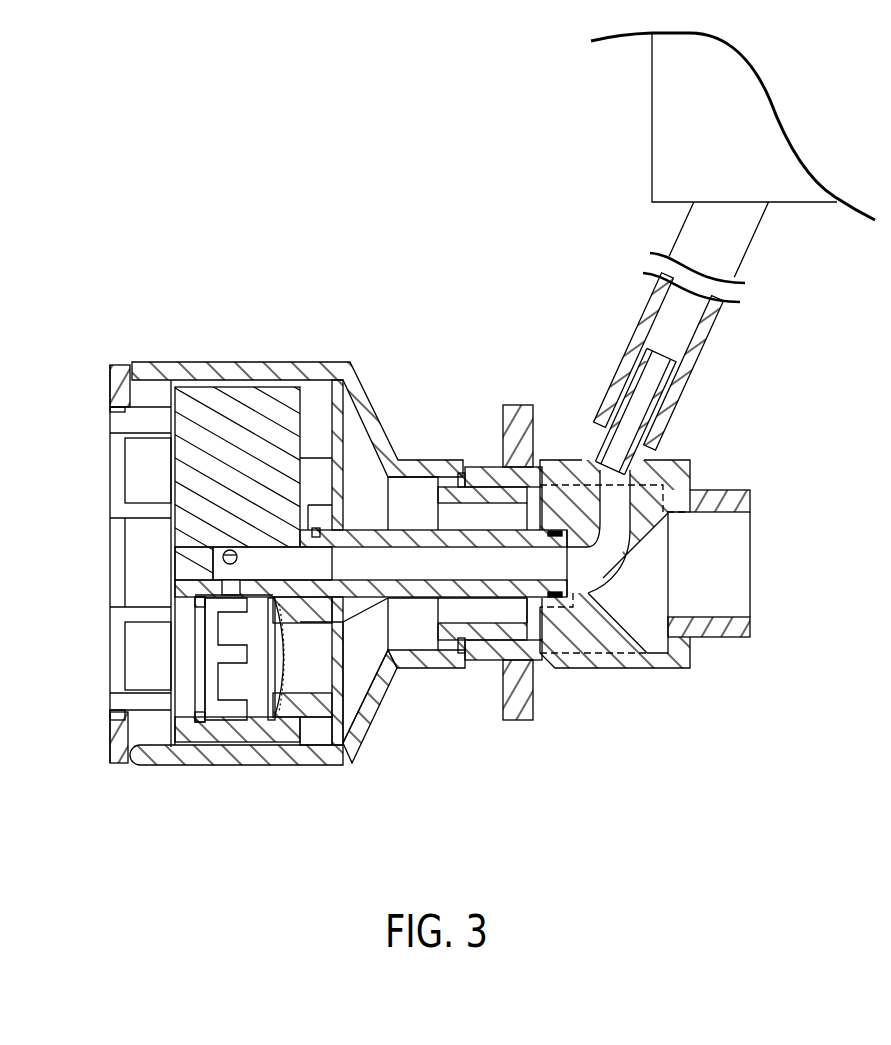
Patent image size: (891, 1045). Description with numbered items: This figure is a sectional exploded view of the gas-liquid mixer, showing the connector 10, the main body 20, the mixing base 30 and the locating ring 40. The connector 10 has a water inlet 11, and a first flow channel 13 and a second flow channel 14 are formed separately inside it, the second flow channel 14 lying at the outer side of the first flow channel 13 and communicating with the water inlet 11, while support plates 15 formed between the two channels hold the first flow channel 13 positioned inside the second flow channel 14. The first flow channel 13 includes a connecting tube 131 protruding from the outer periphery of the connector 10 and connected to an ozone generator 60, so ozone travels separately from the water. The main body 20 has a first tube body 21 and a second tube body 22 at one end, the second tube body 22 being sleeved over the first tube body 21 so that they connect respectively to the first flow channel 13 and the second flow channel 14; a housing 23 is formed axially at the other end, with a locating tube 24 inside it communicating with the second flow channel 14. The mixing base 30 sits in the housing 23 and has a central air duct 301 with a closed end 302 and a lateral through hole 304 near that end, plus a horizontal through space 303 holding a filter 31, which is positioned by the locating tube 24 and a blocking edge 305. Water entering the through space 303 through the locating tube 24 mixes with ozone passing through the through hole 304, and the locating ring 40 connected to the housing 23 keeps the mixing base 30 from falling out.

The connector 10 is at (657, 523).
The water inlet 11 is at (735, 572).
The first flow channel 13 is at (623, 496).
The connecting tube 131 is at (660, 377).
The second flow channel 14 is at (587, 657).
The support plates 15 is at (627, 650).
The main body 20 is at (348, 529).
The first tube body 21 is at (421, 557).
The second tube body 22 is at (360, 645).
The housing 23 is at (257, 380).
The locating tube 24 is at (317, 707).
The mixing base 30 is at (189, 514).
The air duct 301 is at (216, 538).
The closed end 302 is at (218, 556).
The through space 303 is at (217, 723).
The through hole 304 is at (218, 580).
The blocking edge 305 is at (173, 710).
The filter 31 is at (207, 658).
The locating ring 40 is at (102, 524).
The ozone generator 60 is at (650, 98).